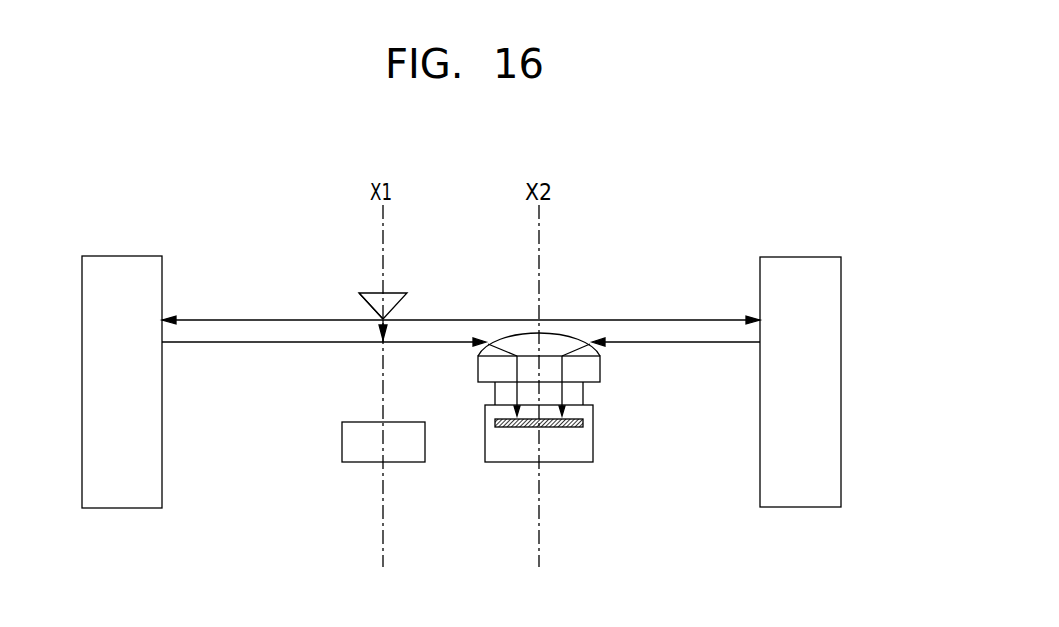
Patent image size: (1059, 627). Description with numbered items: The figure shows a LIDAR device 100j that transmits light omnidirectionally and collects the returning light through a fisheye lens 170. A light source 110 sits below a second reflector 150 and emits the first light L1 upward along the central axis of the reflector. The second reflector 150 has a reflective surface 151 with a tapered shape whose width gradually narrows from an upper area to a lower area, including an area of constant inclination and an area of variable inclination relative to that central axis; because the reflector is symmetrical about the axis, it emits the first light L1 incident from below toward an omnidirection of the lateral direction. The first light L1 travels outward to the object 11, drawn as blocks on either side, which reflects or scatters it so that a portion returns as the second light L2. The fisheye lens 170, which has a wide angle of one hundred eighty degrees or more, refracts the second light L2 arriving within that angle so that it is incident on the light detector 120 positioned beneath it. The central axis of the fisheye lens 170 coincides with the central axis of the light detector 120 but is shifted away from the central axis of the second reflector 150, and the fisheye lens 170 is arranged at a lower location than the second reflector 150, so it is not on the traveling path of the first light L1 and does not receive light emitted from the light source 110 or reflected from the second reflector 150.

The object 11 is at (122, 498).
The LIDAR device 100j is at (734, 208).
The light source 110 is at (352, 442).
The light detector 120 is at (583, 437).
The second reflector 150 is at (396, 290).
The reflective surface 151 is at (362, 298).
The fisheye lens 170 is at (557, 343).
The first light L1 is at (260, 320).
The second light L2 is at (260, 343).